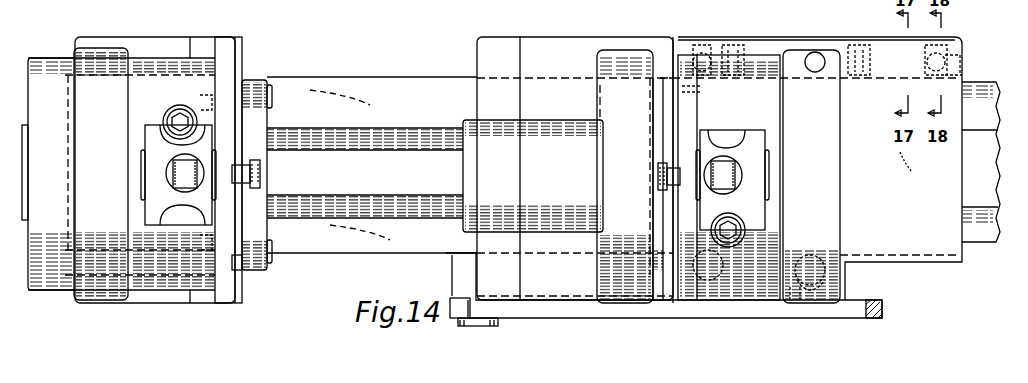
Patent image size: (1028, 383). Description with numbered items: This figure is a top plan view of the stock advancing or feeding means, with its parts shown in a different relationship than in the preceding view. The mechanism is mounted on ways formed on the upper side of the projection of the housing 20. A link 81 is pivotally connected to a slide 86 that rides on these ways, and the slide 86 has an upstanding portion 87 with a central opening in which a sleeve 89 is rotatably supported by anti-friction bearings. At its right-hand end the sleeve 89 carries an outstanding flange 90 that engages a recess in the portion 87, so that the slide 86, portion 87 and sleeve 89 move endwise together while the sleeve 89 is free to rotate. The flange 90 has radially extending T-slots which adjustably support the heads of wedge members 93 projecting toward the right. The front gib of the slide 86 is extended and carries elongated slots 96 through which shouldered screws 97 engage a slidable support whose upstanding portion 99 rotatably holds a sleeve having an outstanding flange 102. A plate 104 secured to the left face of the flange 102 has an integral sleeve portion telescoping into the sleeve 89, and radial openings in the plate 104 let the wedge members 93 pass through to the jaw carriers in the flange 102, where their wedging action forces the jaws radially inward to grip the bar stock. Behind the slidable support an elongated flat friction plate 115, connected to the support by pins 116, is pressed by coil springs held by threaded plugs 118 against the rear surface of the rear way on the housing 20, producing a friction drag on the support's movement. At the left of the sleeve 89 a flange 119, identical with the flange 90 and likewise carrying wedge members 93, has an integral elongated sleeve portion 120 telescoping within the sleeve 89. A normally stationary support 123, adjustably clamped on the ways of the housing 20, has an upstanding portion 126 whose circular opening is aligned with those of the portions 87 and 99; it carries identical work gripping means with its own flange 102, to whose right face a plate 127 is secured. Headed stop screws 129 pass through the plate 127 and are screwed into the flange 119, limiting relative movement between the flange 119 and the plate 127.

The housing 20 is at (385, 78).
The link 81 is at (645, 312).
The slide 86 is at (548, 52).
The upstanding portion 87 is at (620, 58).
The sleeve 89 is at (538, 128).
The outstanding flange 90 is at (665, 148).
The wedge members 93 is at (238, 166).
The elongated slots 96 is at (962, 60).
The shouldered screws 97 is at (962, 73).
The upstanding portion 99 is at (805, 60).
The outstanding flange 102 is at (160, 65).
The plate 104 is at (690, 112).
The friction plate 115 is at (862, 78).
The pins 116 is at (700, 52).
The threaded plugs 118 is at (738, 50).
The flange 119 is at (258, 205).
The sleeve portion 120 is at (400, 142).
The stationary support 123 is at (212, 42).
The upstanding portion 126 is at (100, 57).
The plate 127 is at (238, 68).
The stop screws 129 is at (238, 262).